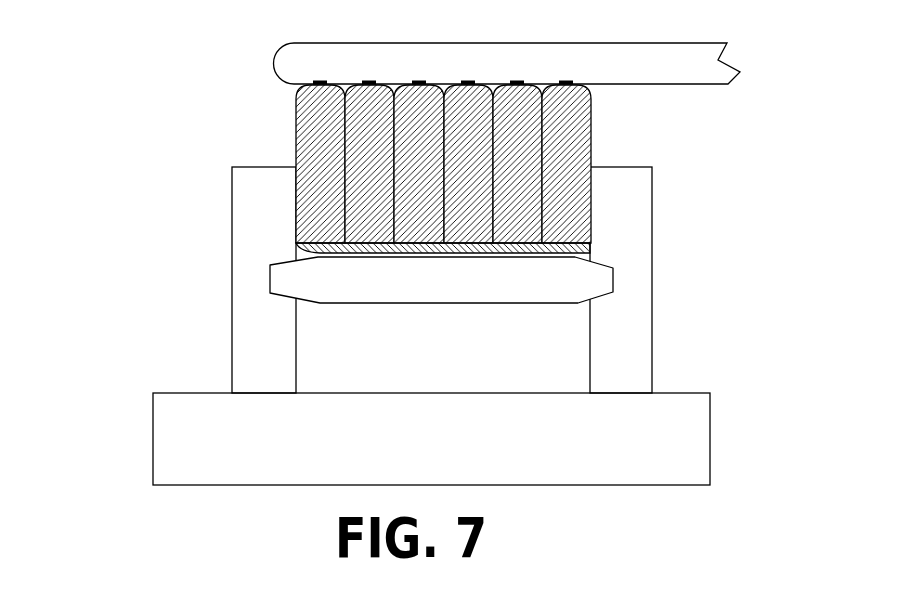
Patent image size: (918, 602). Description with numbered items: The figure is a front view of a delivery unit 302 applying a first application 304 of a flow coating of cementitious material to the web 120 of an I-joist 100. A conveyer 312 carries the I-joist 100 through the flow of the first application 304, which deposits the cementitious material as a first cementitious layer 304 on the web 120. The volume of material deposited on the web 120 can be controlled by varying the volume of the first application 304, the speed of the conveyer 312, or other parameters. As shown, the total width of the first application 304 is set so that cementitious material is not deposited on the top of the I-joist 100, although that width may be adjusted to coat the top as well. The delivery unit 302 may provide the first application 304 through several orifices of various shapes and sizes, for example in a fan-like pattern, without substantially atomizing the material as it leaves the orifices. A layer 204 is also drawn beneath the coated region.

The I-joist 100 is at (152, 257).
The web 120 is at (441, 280).
The thermal interface material layer 204 is at (590, 242).
The delivery unit 302 is at (507, 64).
The first application 304 is at (286, 119).
The conveyer 312 is at (431, 439).